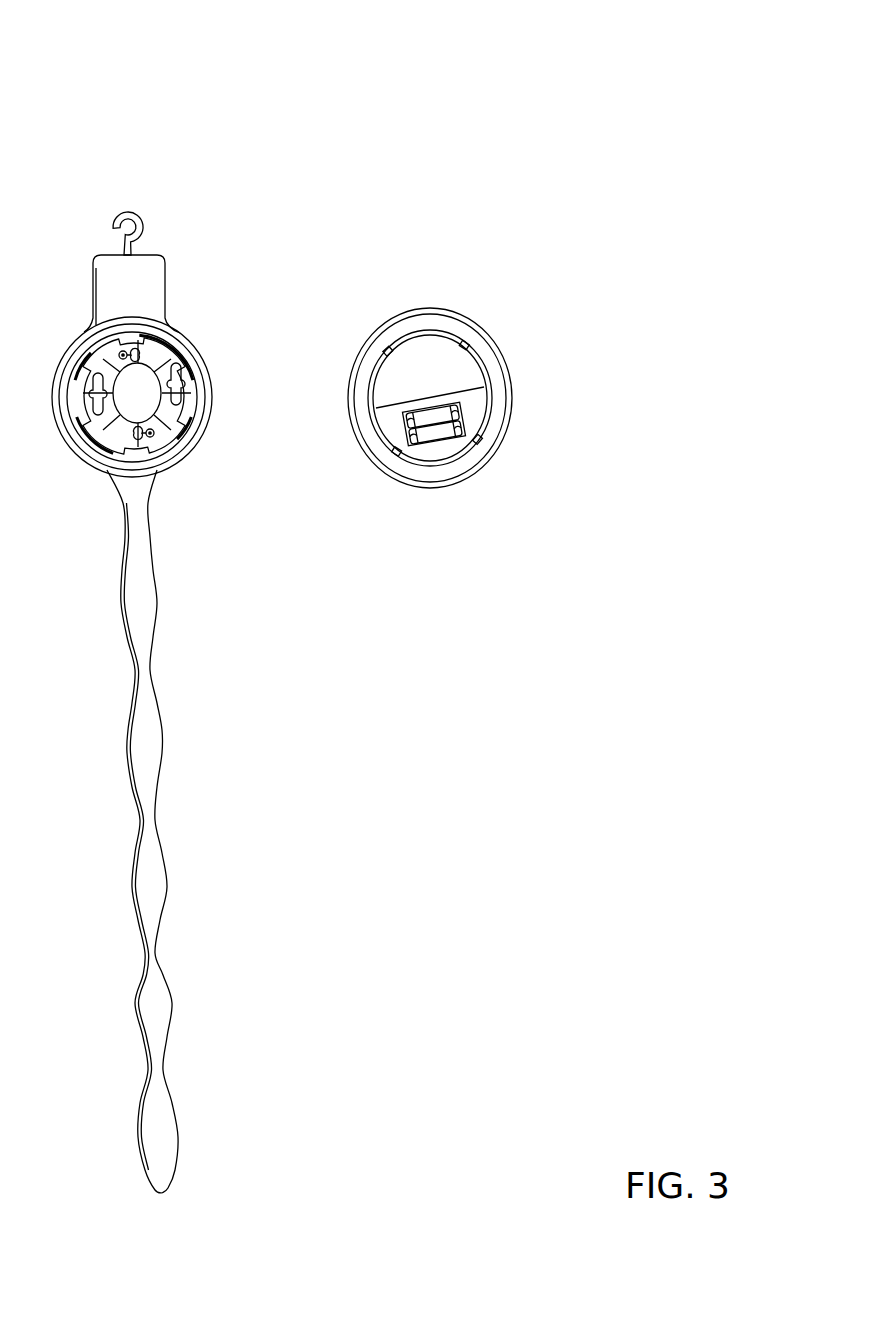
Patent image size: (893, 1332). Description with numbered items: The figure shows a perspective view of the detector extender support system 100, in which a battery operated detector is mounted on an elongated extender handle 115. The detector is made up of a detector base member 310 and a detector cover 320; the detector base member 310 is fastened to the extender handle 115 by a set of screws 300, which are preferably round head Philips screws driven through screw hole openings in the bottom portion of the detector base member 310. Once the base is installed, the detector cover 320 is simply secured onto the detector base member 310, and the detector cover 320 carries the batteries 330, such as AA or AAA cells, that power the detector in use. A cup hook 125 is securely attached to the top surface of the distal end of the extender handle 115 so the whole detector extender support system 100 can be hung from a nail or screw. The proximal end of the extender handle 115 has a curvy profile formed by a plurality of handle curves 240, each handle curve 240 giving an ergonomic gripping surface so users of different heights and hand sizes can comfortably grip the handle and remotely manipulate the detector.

The detector extender support system 100 is at (483, 90).
The cup hook 125 is at (143, 230).
The extender handle 115 is at (140, 613).
The handle curves 240 is at (163, 745).
The screws 300 is at (158, 433).
The detector base member 310 is at (187, 375).
The detector cover 320 is at (450, 375).
The batteries 330 is at (435, 438).